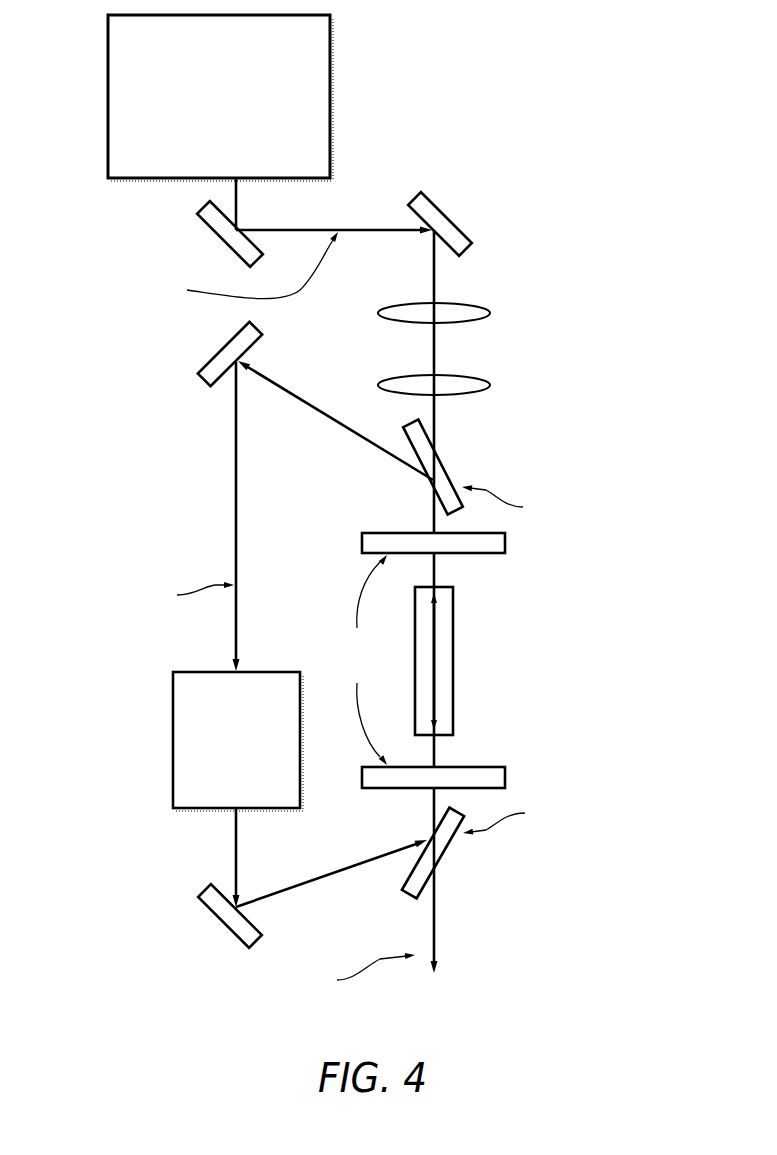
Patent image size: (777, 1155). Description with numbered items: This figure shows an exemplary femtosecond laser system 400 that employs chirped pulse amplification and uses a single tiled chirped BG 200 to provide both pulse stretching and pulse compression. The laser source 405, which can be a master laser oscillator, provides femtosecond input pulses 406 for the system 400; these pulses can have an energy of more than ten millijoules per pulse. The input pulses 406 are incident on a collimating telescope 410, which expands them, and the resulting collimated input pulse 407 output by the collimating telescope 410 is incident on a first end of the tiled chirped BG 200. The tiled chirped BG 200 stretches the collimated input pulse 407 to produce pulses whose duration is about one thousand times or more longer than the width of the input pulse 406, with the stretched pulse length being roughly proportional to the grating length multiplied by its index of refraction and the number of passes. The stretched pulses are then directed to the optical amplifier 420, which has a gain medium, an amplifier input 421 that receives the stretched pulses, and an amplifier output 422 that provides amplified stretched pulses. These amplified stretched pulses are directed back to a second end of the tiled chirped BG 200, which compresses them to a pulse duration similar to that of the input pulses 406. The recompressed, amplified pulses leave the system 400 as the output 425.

The femtosecond laser system 400 is at (538, 157).
The laser source 405 is at (330, 95).
The input pulses 406 is at (350, 200).
The collimated input pulse 407 is at (435, 415).
The collimating telescope 410 is at (502, 324).
The tiled chirped BG 200 is at (462, 679).
The optical amplifier 420 is at (173, 768).
The amplifier input 421 is at (237, 672).
The amplifier output 422 is at (236, 810).
The output 425 is at (434, 995).